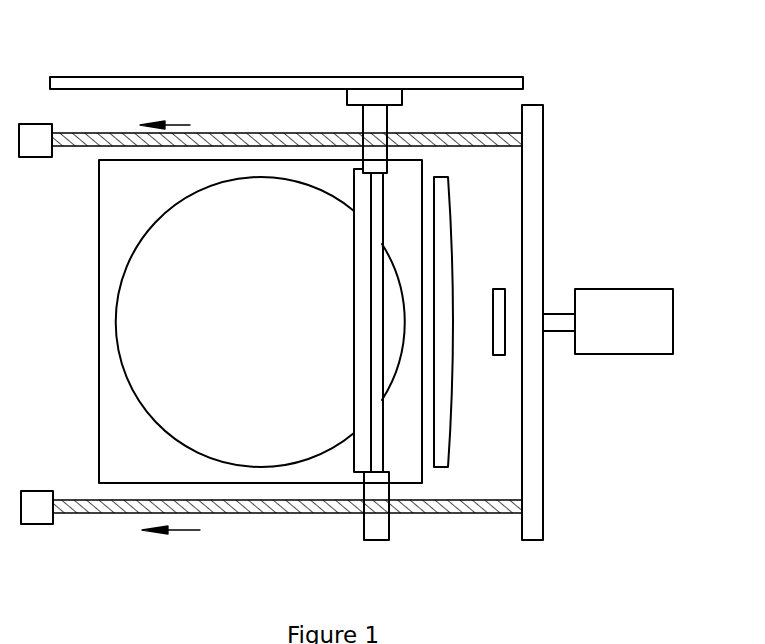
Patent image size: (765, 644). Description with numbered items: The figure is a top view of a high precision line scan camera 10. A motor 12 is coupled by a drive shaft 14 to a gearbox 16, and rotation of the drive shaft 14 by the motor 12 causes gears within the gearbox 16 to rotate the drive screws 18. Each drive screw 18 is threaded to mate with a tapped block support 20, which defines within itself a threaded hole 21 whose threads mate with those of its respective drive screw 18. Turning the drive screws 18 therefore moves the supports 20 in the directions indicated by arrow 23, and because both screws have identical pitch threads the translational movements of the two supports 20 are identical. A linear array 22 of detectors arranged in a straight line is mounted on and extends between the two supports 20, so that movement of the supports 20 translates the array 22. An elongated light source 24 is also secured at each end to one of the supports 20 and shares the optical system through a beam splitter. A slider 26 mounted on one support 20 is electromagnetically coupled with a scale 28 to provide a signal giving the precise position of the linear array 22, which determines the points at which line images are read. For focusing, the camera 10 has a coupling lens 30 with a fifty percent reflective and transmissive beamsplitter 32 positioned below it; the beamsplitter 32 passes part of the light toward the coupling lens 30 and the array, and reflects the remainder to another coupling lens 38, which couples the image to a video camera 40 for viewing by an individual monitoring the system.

The line scan camera 10 is at (588, 78).
The motor 12 is at (650, 297).
The drive shaft 14 is at (562, 318).
The gearbox 16 is at (535, 247).
The drive screws 18 is at (489, 136).
The tapped block support 20 is at (377, 120).
The threaded hole 21 is at (393, 133).
The linear array 22 is at (388, 448).
The arrow 23 is at (188, 125).
The elongated light source 24 is at (353, 462).
The slider 26 is at (346, 98).
The scale 28 is at (252, 84).
The coupling lens 30 is at (140, 282).
The beamsplitter 32 is at (117, 193).
The coupling lens 38 is at (445, 208).
The camera 40 is at (505, 340).